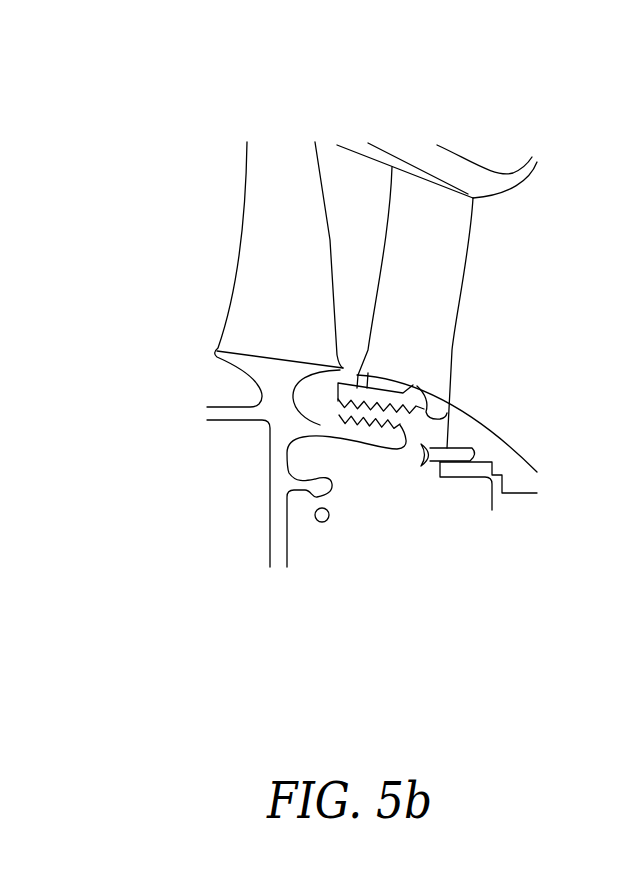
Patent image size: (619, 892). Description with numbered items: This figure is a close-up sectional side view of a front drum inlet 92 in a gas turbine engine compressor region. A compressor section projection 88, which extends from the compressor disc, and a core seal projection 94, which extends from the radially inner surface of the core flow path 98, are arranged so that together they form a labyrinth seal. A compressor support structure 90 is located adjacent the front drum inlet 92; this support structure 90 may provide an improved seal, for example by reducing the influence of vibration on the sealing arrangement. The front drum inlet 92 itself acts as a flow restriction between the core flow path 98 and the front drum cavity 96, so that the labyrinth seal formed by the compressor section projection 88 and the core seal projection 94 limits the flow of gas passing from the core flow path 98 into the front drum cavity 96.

The compressor section projection 88 is at (318, 423).
The compressor support structure 90 is at (433, 237).
The front drum inlet 92 is at (393, 383).
The core seal projection 94 is at (423, 412).
The front drum cavity 96 is at (395, 503).
The core flow path 98 is at (360, 205).